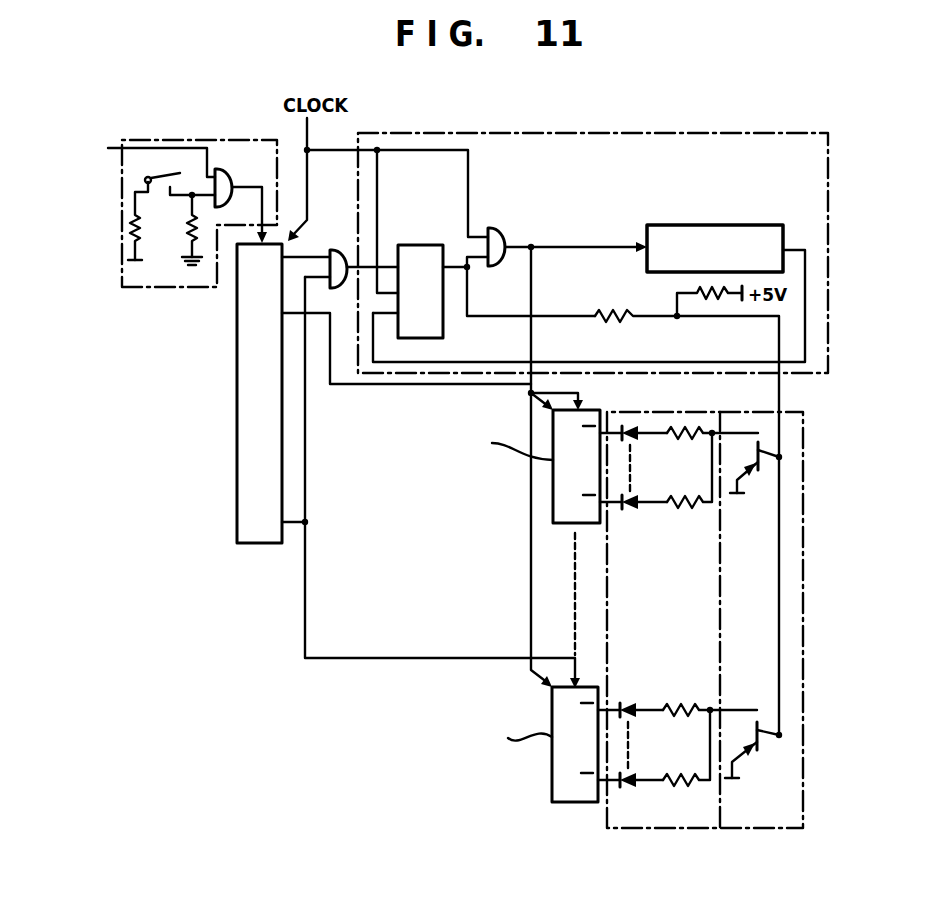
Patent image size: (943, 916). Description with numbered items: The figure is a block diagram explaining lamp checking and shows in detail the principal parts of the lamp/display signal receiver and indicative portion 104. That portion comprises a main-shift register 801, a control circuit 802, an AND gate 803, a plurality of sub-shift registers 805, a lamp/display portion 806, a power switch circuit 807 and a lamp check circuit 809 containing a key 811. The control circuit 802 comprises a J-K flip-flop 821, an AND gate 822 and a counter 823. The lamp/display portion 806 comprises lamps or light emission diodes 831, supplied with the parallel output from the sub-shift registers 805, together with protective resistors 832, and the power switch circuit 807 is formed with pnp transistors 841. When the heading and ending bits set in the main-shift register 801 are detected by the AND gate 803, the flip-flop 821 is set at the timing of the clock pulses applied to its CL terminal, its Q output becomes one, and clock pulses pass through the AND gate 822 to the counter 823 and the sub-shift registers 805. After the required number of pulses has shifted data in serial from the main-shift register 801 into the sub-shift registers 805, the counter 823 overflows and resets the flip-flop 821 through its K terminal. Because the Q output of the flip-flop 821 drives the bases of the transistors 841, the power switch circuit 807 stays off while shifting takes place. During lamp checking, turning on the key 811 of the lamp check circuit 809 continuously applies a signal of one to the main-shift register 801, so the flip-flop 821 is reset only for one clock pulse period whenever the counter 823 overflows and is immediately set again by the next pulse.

The lamp/display signal receiver and indicative portion 104 is at (240, 679).
The main-shift register 801 is at (253, 545).
The control circuit 802 is at (666, 133).
The AND gate 803 is at (343, 250).
The sub-shift registers 805 is at (612, 397).
The lamp/display portion 806 is at (638, 828).
The power switch circuit 807 is at (762, 828).
The lamp check circuit 809 is at (248, 136).
The key 811 is at (159, 167).
The J-K flip-flop 821 is at (423, 245).
The AND gate 822 is at (507, 228).
The counter 823 is at (673, 225).
The lamps or light emission diodes 831 is at (633, 511).
The protective resistors 832 is at (685, 511).
The transistors 841 is at (759, 444).